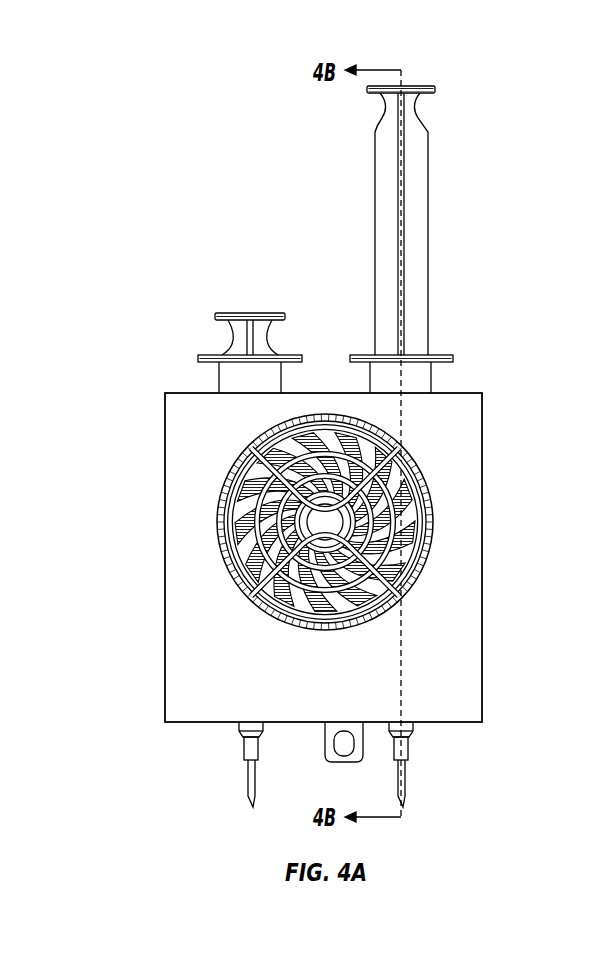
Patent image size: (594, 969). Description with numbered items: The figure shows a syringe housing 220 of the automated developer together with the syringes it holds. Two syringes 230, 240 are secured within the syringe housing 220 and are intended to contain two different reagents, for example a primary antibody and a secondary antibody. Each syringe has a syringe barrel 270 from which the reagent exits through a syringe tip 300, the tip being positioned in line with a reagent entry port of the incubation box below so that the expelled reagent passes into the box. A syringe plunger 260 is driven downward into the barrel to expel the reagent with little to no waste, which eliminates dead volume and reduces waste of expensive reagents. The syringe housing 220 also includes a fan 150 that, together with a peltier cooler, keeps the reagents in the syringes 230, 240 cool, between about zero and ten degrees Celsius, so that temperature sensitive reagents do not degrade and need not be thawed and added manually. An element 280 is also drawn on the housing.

The syringe housing 220 is at (181, 104).
The syringe 230 is at (176, 351).
The syringe 240 is at (385, 220).
The syringe plunger 260 is at (432, 181).
The syringe barrel 270 is at (432, 381).
The fan 150 is at (236, 509).
The electrical connector 280 is at (247, 782).
The syringe tip 300 is at (405, 782).